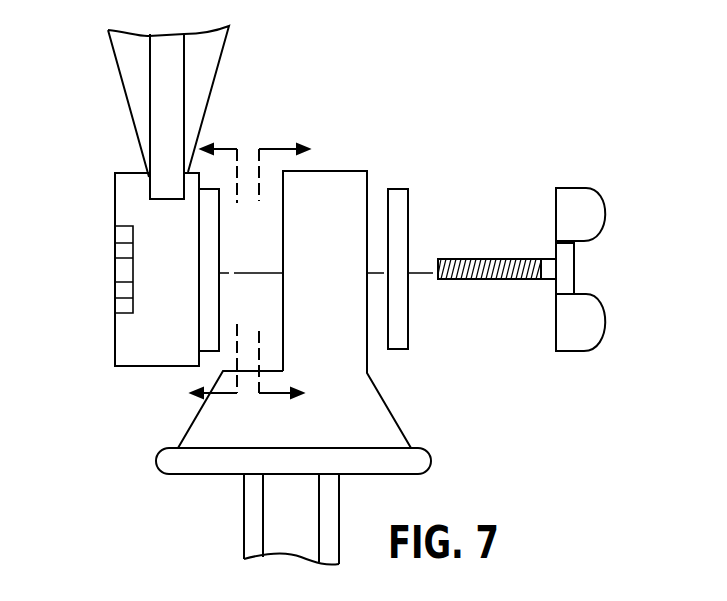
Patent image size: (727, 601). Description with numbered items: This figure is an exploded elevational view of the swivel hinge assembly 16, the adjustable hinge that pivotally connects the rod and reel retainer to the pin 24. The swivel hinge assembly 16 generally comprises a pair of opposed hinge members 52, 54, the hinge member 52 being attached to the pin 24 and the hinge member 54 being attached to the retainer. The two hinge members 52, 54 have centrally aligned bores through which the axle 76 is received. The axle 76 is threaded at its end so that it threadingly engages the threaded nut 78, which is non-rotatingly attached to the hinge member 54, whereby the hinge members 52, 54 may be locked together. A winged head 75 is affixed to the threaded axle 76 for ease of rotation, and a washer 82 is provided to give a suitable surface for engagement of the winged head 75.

The swivel hinge assembly 16 is at (315, 81).
The pin 24 is at (242, 516).
The hinge member 52 is at (333, 170).
The hinge member 54 is at (114, 209).
The winged head 75 is at (603, 207).
The axle 76 is at (500, 258).
The threaded nut 78 is at (116, 289).
The washer 82 is at (400, 188).